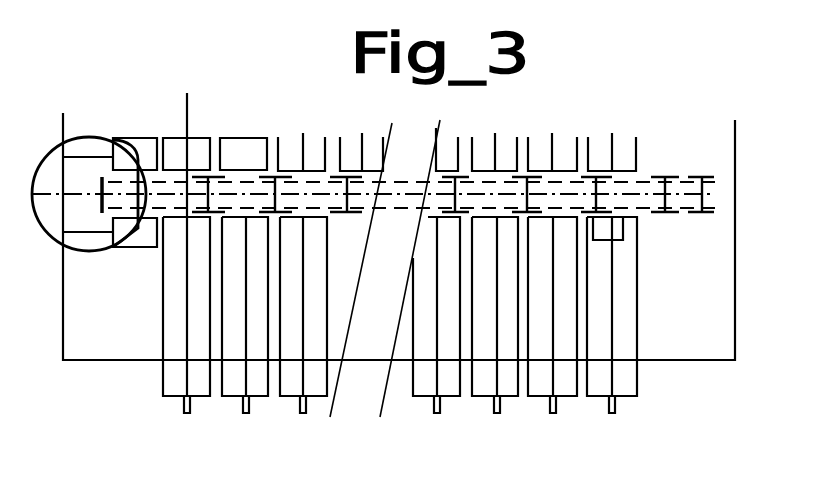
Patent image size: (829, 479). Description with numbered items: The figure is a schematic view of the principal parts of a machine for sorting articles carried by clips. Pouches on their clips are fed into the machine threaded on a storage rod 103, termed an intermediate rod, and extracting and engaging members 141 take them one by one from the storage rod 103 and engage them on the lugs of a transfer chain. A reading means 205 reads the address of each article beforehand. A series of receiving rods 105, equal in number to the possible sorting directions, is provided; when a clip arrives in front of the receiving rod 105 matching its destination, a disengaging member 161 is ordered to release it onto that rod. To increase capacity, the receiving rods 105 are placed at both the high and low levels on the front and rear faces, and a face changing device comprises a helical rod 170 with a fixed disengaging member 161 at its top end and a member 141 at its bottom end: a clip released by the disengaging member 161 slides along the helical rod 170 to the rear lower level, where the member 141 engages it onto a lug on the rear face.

The storage rod 103 is at (184, 113).
The receiving rods 105 is at (553, 292).
The extracting and engaging members 141 is at (197, 148).
The disengaging member 161 is at (143, 150).
The helical rod 170 is at (76, 252).
The reading means 205 is at (248, 152).